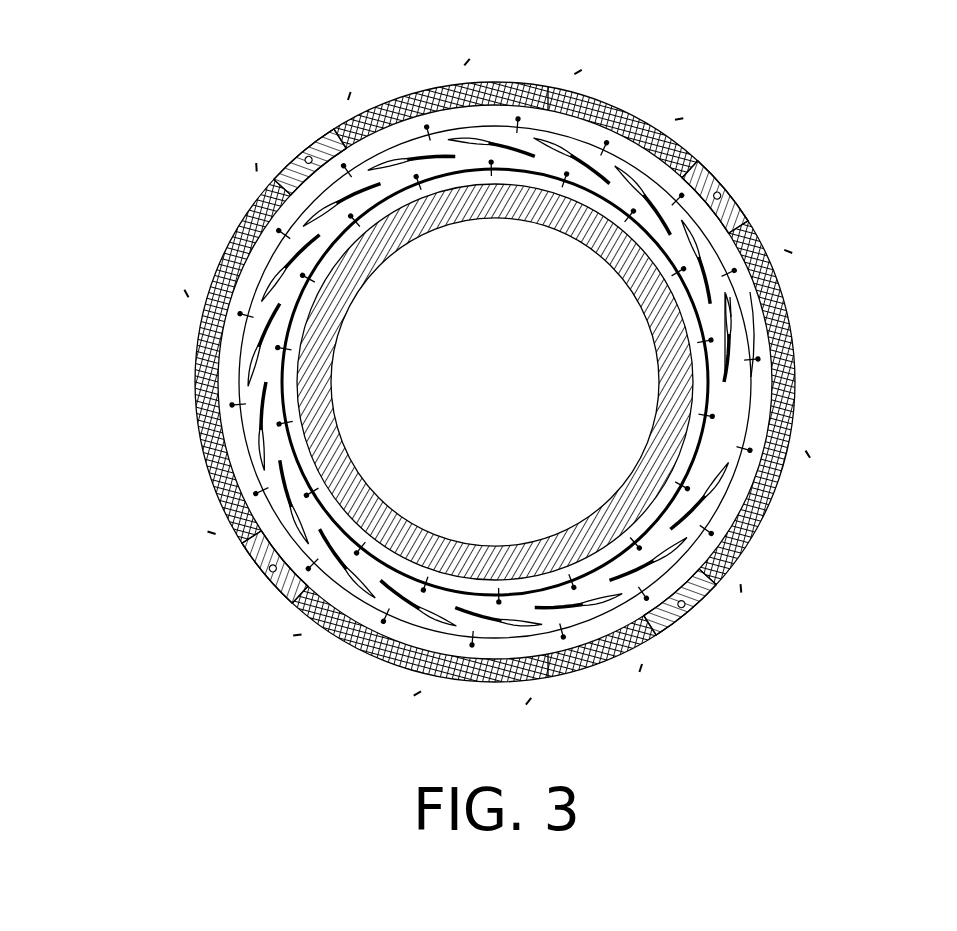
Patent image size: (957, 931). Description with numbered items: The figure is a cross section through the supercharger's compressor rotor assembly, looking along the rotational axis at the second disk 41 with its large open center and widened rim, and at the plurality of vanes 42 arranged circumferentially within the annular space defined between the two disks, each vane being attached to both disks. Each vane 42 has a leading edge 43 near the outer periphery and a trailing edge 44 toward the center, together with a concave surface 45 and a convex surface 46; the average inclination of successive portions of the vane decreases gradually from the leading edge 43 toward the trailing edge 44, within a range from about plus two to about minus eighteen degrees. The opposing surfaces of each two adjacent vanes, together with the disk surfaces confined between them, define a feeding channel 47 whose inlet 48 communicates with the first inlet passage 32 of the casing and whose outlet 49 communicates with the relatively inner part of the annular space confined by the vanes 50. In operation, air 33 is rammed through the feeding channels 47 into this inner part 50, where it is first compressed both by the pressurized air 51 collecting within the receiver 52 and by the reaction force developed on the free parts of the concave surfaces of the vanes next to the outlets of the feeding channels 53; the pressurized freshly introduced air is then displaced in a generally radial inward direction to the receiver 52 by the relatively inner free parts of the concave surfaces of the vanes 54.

The first inlet passage 32 is at (290, 175).
The air 33 is at (237, 197).
The second disk 41 is at (270, 362).
The vanes 42 is at (253, 442).
The leading edge 43 is at (725, 292).
The trailing edge 44 is at (725, 377).
The concave surface 45 is at (727, 268).
The convex surface 46 is at (700, 255).
The feeding channel 47 is at (673, 220).
The inlet 48 is at (377, 175).
The outlet 49 is at (370, 170).
The relatively inner part of the annular space confined by the vanes 50 is at (417, 170).
The pressurized air 51 is at (317, 255).
The receiver 52 is at (290, 393).
The free parts of the concave surfaces of the vanes next to the outlets of the feedi 53 is at (723, 310).
The relatively inner free parts of the concave surfaces of the vanes 54 is at (703, 366).